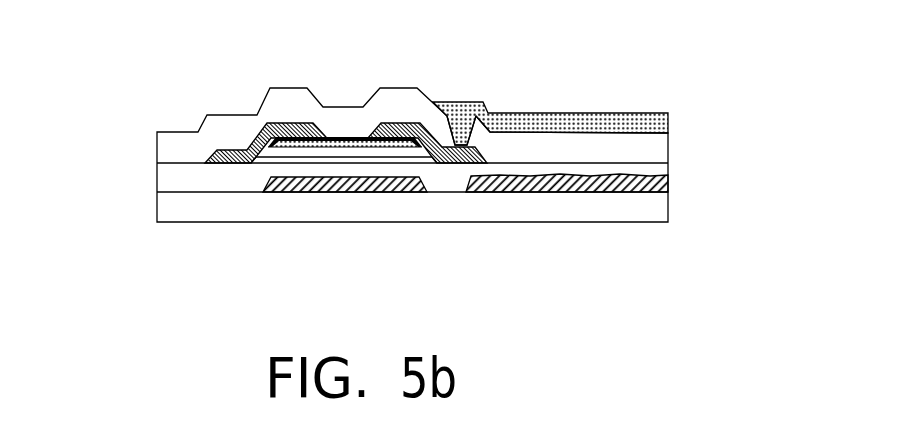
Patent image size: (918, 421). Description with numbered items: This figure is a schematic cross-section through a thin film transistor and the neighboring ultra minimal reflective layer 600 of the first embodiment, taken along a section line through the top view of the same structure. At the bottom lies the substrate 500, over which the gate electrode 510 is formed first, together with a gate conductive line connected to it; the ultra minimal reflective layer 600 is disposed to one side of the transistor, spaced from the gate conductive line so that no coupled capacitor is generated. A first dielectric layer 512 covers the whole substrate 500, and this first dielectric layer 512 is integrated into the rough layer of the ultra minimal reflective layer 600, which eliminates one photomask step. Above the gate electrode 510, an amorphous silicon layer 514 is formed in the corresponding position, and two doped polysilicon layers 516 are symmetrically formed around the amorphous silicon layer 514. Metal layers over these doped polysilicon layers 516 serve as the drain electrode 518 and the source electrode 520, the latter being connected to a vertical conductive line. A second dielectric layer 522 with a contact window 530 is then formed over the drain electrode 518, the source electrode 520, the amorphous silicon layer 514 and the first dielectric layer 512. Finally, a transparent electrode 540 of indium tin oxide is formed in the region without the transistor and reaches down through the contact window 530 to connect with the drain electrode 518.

The substrate 500 is at (175, 214).
The gate electrode 510 is at (263, 180).
The first dielectric layer 512 is at (167, 173).
The amorphous silicon layer 514 is at (298, 153).
The doped polysilicon layers 516 is at (397, 153).
The drain electrode 518 is at (482, 151).
The source electrode 520 is at (212, 152).
The second dielectric layer 522 is at (665, 148).
The contact window 530 is at (458, 102).
The transparent electrode 540 is at (668, 119).
The ultra minimal reflective layer 600 is at (667, 185).